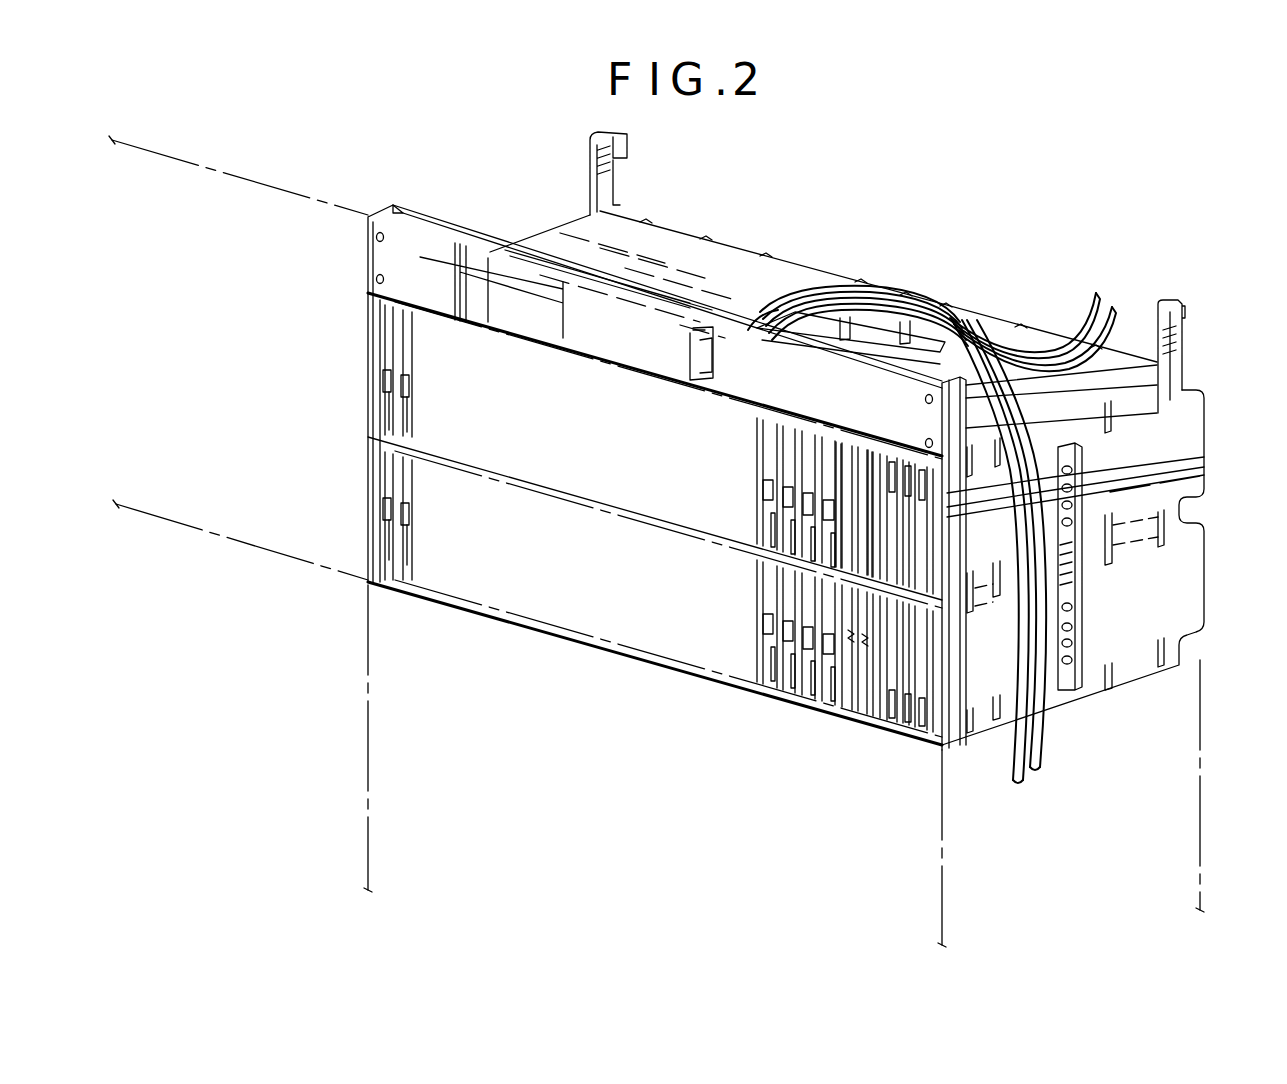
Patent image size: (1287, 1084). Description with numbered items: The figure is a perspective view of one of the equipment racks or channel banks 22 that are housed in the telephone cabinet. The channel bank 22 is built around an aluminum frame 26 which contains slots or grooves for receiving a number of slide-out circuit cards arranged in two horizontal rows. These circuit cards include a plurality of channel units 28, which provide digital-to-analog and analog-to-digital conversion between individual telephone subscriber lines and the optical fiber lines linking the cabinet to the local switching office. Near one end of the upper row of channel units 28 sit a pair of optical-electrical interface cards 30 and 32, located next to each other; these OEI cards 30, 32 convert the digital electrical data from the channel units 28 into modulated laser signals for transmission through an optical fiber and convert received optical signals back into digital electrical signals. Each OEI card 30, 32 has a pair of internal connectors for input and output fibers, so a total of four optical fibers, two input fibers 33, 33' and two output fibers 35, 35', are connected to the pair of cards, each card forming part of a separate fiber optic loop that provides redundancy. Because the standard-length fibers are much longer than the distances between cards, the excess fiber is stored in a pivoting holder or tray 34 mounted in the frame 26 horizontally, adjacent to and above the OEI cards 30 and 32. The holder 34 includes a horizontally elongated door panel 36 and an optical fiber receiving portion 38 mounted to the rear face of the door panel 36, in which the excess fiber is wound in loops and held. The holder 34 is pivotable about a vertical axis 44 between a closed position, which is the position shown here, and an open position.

The equipment rack or channel bank 22 is at (918, 283).
The aluminum frame 26 is at (1188, 451).
The channel units 28 is at (757, 520).
The optical-electrical interface (OEI) card 30 is at (837, 452).
The optical-electrical interface (OEI) card 32 is at (873, 456).
The input optical fiber 33 is at (1025, 312).
The output optical fiber 35 is at (1037, 327).
The input optical fiber 33' is at (1031, 551).
The output optical fiber 35' is at (1032, 560).
The pivoting holder or tray 34 is at (793, 297).
The door panel 36 is at (745, 400).
The optical fiber receiving portion 38 is at (760, 320).
The vertical axis 44 is at (714, 353).